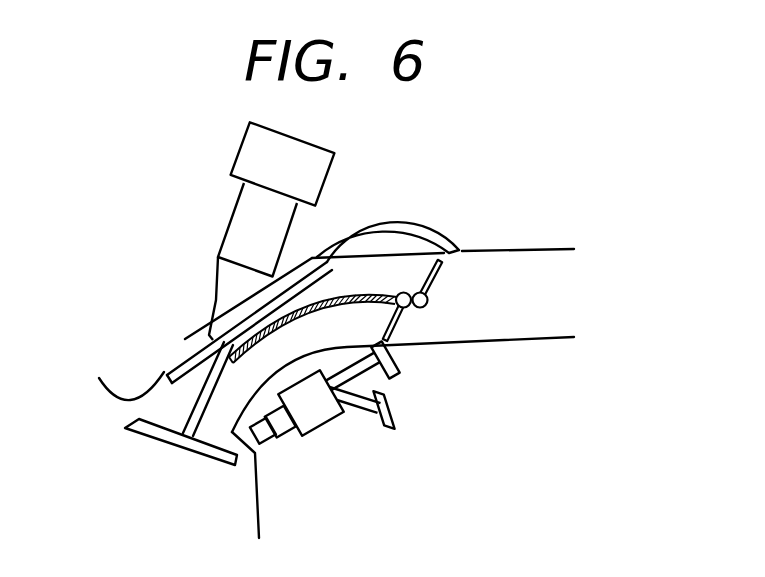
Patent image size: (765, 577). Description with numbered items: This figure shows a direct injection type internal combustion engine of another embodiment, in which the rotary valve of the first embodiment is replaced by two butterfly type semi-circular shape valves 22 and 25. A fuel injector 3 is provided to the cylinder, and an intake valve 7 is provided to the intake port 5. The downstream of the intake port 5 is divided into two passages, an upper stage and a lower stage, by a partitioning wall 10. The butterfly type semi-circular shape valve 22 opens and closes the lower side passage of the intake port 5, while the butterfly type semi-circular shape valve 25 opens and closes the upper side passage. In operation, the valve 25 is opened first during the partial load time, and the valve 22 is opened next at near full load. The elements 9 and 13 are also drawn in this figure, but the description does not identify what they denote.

The fuel injector 3 is at (320, 425).
The intake port 5 is at (190, 333).
The intake valve 7 is at (233, 459).
The pressing pad 9 is at (380, 222).
The partitioning wall 10 is at (350, 298).
The actuator 13 is at (236, 150).
The butterfly type semi-circular shape valve 22 is at (397, 327).
The butterfly type semi-circular shape valve 25 is at (422, 305).